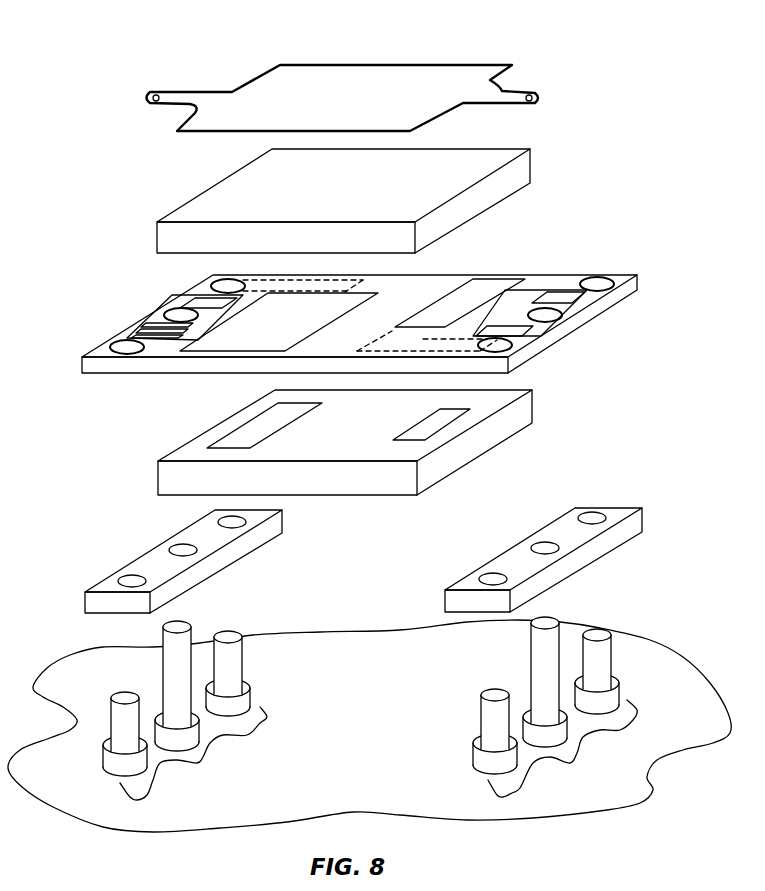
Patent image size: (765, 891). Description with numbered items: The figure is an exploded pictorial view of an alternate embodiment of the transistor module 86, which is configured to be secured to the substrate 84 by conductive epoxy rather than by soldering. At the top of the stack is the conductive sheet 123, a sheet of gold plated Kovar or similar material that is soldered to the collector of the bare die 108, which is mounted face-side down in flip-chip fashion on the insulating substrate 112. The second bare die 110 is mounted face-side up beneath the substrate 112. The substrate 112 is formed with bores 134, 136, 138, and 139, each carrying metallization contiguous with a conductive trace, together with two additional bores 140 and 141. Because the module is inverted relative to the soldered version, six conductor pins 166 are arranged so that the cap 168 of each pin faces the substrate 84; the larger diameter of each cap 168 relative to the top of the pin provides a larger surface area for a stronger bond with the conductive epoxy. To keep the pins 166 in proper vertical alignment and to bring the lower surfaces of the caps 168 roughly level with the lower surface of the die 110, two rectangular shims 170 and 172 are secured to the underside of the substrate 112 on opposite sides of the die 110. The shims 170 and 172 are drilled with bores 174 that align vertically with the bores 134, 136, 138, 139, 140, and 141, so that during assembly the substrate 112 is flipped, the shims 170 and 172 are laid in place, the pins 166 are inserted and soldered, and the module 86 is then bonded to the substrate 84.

The transistor module 86 is at (104, 176).
The conductive sheet 123 is at (477, 70).
The bare die 108 is at (532, 163).
The substrate 112 is at (638, 280).
The bore 134 is at (110, 343).
The bore 136 is at (593, 278).
The bore 138 is at (213, 278).
The bore 139 is at (513, 350).
The additional bore 140 is at (163, 312).
The additional bore 141 is at (560, 318).
The bare die 110 is at (533, 415).
The rectangular shim 170 is at (107, 585).
The rectangular shim 172 is at (642, 517).
The bores 174 is at (237, 522).
The substrate 84 is at (374, 724).
The conductor pins 166 is at (390, 708).
The cap 168 is at (617, 690).